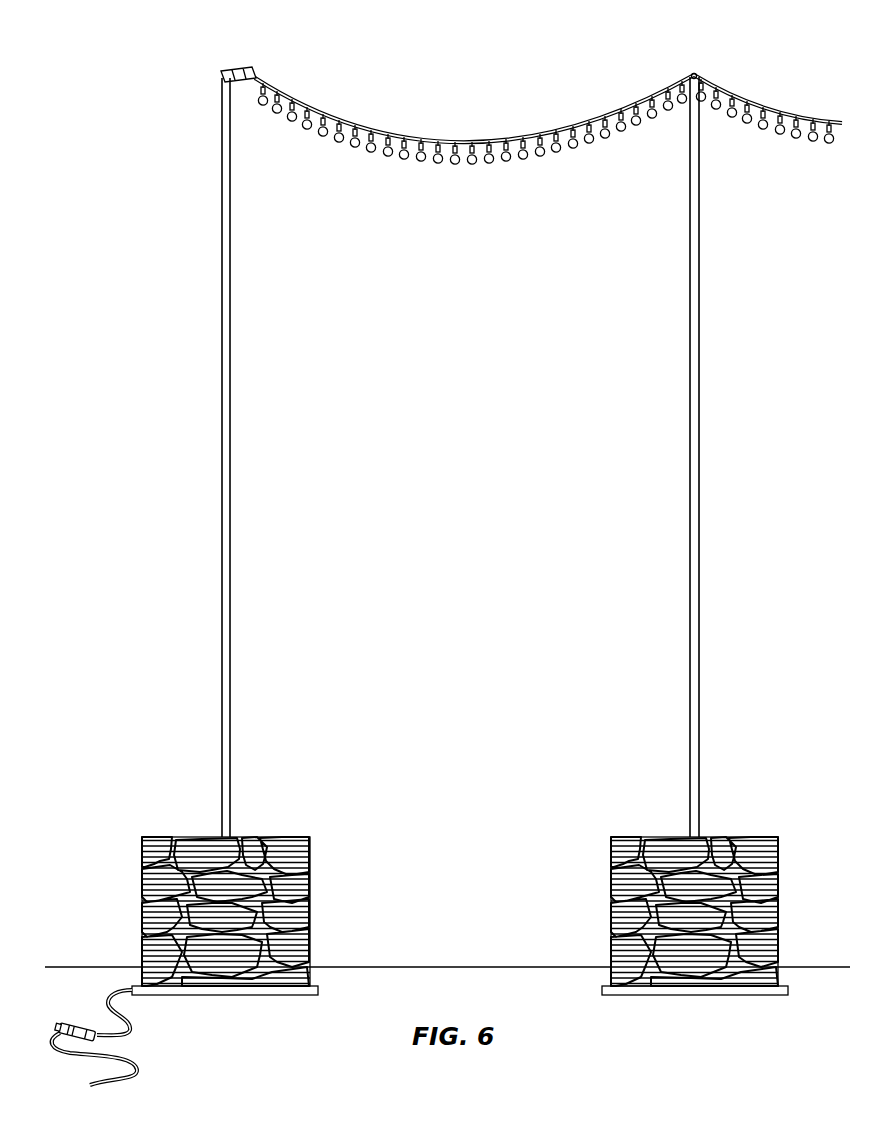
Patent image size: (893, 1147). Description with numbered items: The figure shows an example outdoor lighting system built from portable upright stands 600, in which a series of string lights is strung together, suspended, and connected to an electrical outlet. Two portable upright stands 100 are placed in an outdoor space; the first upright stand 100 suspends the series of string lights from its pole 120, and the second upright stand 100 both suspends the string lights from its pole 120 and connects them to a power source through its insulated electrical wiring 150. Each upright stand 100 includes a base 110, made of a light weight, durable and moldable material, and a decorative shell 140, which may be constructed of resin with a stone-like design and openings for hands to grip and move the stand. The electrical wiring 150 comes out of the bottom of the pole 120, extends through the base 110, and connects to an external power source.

The portable upright stand 600 is at (190, 65).
The pole 120 is at (233, 274).
The upright stand 100 is at (183, 826).
The decorative shell 140 is at (608, 846).
The base 110 is at (321, 993).
The insulated electrical wiring 150 is at (136, 1037).